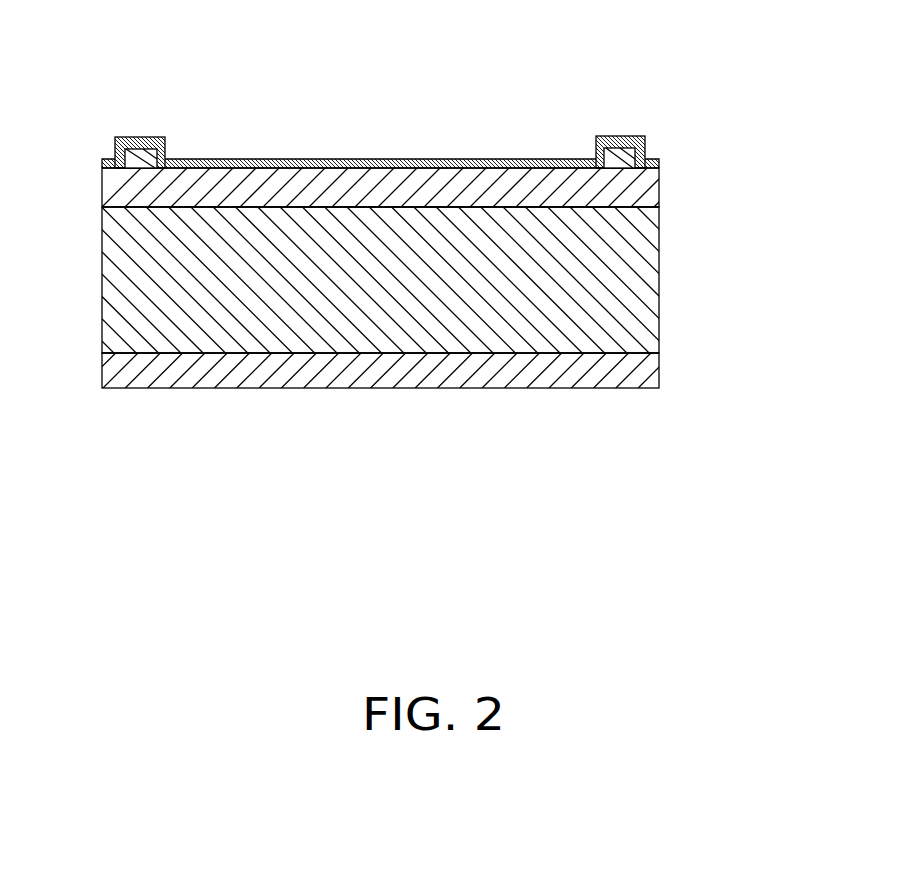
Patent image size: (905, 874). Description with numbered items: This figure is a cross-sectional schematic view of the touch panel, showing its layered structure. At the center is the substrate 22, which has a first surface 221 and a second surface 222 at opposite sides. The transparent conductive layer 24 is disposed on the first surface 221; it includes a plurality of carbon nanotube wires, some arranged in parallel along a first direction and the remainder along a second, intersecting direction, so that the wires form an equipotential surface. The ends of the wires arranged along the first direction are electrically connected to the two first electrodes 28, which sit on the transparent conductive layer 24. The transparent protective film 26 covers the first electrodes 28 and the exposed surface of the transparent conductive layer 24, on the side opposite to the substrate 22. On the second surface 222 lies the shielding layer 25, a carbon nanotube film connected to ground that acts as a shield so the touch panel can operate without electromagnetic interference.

The substrate 22 is at (605, 292).
The first surface 221 is at (178, 212).
The second surface 222 is at (167, 340).
The transparent conductive layer 24 is at (628, 190).
The shielding layer 25 is at (517, 367).
The transparent protective film 26 is at (255, 162).
The first electrodes 28 is at (135, 145).